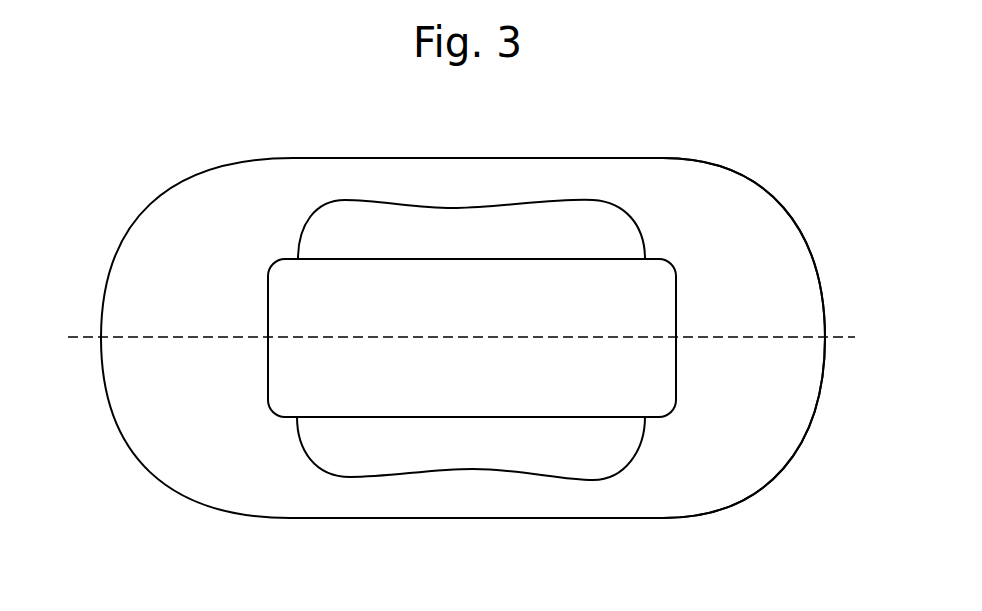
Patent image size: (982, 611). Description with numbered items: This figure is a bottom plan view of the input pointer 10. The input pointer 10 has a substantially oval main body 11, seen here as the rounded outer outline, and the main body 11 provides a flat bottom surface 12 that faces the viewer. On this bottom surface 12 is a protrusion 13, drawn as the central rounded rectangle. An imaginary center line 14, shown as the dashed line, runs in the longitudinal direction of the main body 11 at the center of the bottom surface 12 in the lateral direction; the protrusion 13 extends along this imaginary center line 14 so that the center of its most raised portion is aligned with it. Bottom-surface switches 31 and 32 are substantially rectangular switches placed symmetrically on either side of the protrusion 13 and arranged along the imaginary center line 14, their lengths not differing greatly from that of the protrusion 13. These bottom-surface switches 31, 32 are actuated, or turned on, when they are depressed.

The input pointer 10 is at (761, 150).
The main body 11 is at (808, 437).
The bottom surface 12 is at (797, 250).
The protrusion 13 is at (280, 396).
The imaginary center line 14 is at (68, 337).
The bottom-surface switch 31 is at (457, 208).
The bottom-surface switch 32 is at (472, 470).